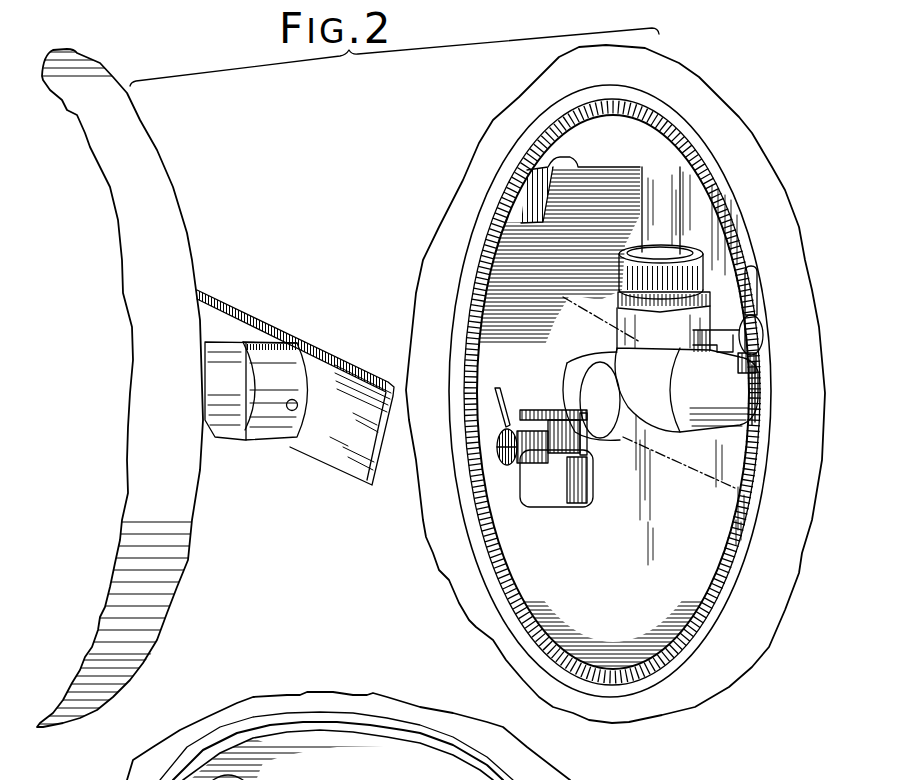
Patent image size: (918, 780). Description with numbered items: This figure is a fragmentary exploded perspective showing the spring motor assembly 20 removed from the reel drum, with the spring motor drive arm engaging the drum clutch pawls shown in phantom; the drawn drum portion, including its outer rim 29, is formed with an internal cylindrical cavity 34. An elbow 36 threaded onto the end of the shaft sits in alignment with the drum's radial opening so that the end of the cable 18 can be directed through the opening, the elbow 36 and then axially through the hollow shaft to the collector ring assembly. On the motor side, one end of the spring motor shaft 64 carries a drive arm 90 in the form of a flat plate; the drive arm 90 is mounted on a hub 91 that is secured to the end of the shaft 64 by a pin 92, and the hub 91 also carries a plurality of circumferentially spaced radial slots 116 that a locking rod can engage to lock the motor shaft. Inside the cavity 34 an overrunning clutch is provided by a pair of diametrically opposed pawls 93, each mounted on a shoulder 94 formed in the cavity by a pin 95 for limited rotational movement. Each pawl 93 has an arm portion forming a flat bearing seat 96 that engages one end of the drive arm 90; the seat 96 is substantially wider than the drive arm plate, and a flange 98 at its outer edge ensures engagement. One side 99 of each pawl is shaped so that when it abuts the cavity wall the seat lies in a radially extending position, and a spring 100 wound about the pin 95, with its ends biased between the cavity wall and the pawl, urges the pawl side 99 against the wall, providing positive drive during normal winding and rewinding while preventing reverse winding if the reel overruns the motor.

The cable 18 is at (680, 205).
The spring motor assembly 20 is at (170, 596).
The rim flange 29 is at (672, 681).
The internal cylindrical cavity 34 is at (540, 585).
The elbow 36 is at (594, 392).
The spring motor shaft 64 is at (219, 370).
The drive arm 90 is at (335, 357).
The hub 91 is at (253, 445).
The pin 92 is at (291, 411).
The pawl 93 is at (751, 268).
The shoulder 94 is at (530, 417).
The pin 95 is at (763, 330).
The bearing seat 96 is at (753, 372).
The flange 98 is at (443, 432).
The pawl side 99 is at (530, 507).
The spring 100 is at (502, 452).
The radial slots 116 is at (253, 342).